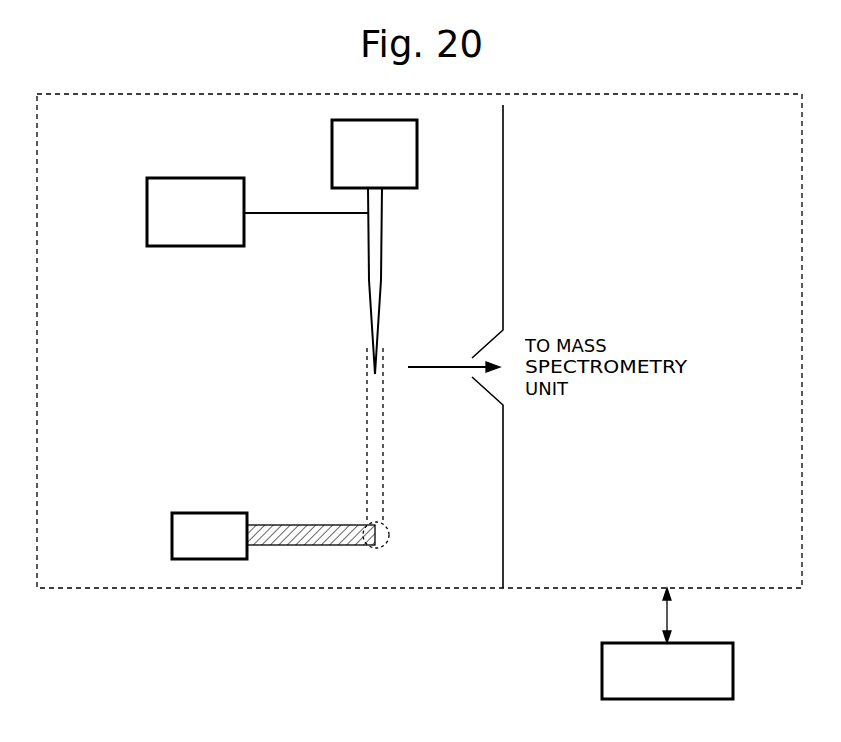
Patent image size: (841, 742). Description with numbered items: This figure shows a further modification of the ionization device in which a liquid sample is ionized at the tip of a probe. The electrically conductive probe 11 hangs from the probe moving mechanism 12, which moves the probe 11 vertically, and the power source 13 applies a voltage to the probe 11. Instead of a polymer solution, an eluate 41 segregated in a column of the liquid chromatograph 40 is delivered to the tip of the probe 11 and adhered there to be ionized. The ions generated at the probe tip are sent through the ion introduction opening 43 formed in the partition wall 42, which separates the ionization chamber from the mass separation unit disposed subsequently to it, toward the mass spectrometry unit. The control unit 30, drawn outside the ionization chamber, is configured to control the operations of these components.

The probe 11 is at (384, 250).
The probe moving mechanism 12 is at (417, 151).
The power source 13 is at (200, 178).
The control unit 30 is at (733, 672).
The liquid chromatograph 40 is at (172, 532).
The eluate 41 is at (384, 546).
The partition wall 42 is at (503, 462).
The ion introduction opening 43 is at (462, 343).